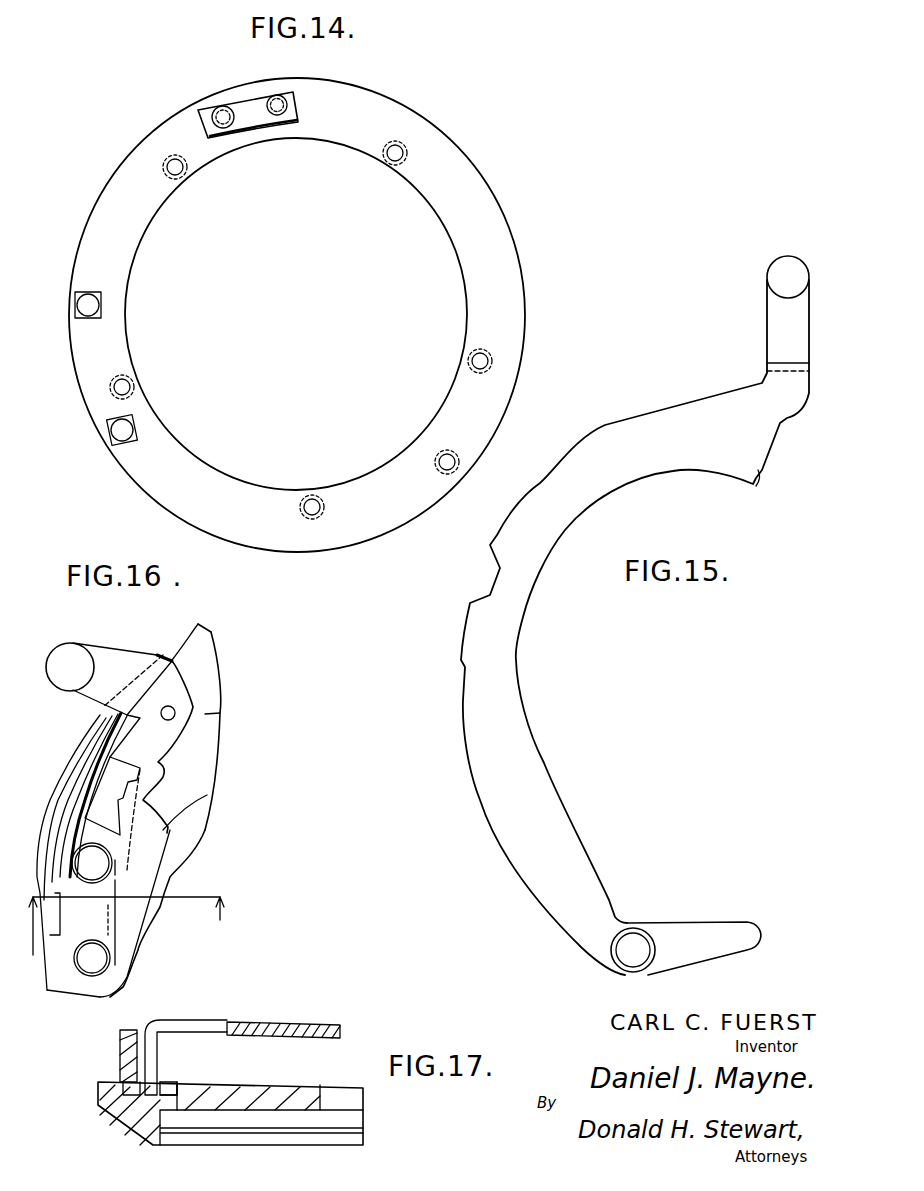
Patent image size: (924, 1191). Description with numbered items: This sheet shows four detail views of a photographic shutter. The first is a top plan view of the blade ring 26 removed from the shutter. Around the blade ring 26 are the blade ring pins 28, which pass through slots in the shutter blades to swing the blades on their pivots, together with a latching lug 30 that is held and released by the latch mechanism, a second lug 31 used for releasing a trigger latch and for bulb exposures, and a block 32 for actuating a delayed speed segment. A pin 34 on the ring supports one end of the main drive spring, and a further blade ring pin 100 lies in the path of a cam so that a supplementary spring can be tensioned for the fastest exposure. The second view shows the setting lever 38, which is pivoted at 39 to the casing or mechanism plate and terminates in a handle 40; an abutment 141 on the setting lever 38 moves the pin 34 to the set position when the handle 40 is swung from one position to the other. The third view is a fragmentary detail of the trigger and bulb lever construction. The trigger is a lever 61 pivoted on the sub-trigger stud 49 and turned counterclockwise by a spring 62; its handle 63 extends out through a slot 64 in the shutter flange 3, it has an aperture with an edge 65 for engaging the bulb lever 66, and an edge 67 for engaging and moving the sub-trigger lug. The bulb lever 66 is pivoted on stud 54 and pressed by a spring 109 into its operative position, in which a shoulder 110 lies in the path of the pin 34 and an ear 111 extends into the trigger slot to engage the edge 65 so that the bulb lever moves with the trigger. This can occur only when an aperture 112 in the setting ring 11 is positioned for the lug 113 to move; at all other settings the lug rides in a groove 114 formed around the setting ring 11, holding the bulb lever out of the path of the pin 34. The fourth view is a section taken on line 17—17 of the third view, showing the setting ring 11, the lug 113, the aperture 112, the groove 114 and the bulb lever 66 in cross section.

In FIG. 14, the blade ring 26 is at (505, 270).
In FIG. 14, the blade ring pins 28 is at (474, 357).
In FIG. 14, the latching lug 30 is at (112, 434).
In FIG. 14, the second lug 31 is at (85, 296).
In FIG. 14, the block 32 is at (246, 100).
In FIG. 14, the pin 34 is at (220, 108).
In FIG. 14, the blade ring pin 100 is at (440, 455).
In FIG. 15, the setting lever 38 is at (527, 741).
In FIG. 15, the pivot 39 is at (637, 945).
In FIG. 15, the handle 40 is at (787, 265).
In FIG. 15, the abutment 141 is at (760, 490).
In FIG. 16, the flange 3 is at (202, 636).
In FIG. 16, the diaphragm scale 17 is at (126, 941).
In FIG. 16, the sub-trigger stud 49 is at (90, 853).
In FIG. 16, the stud 54 is at (92, 965).
In FIG. 16, the trigger 61 is at (178, 690).
In FIG. 16, the spring 62 is at (82, 752).
In FIG. 16, the handle 63 is at (72, 655).
In FIG. 16, the slot 64 is at (165, 654).
In FIG. 16, the edge 65 is at (135, 777).
In FIG. 16, the bulb lever 66 is at (113, 933).
In FIG. 17, the bulb lever 66 is at (290, 1024).
In FIG. 16, the edge 67 is at (212, 735).
In FIG. 16, the spring 109 is at (120, 948).
In FIG. 16, the shoulder 110 is at (213, 802).
In FIG. 16, the ear 111 is at (112, 718).
In FIG. 16, the aperture 112 is at (78, 910).
In FIG. 17, the aperture 112 is at (168, 1086).
In FIG. 16, the lug 113 is at (40, 893).
In FIG. 17, the lug 113 is at (150, 1050).
In FIG. 16, the groove 114 is at (66, 997).
In FIG. 17, the groove 114 is at (100, 1117).
In FIG. 17, the setting ring 11 is at (142, 1132).